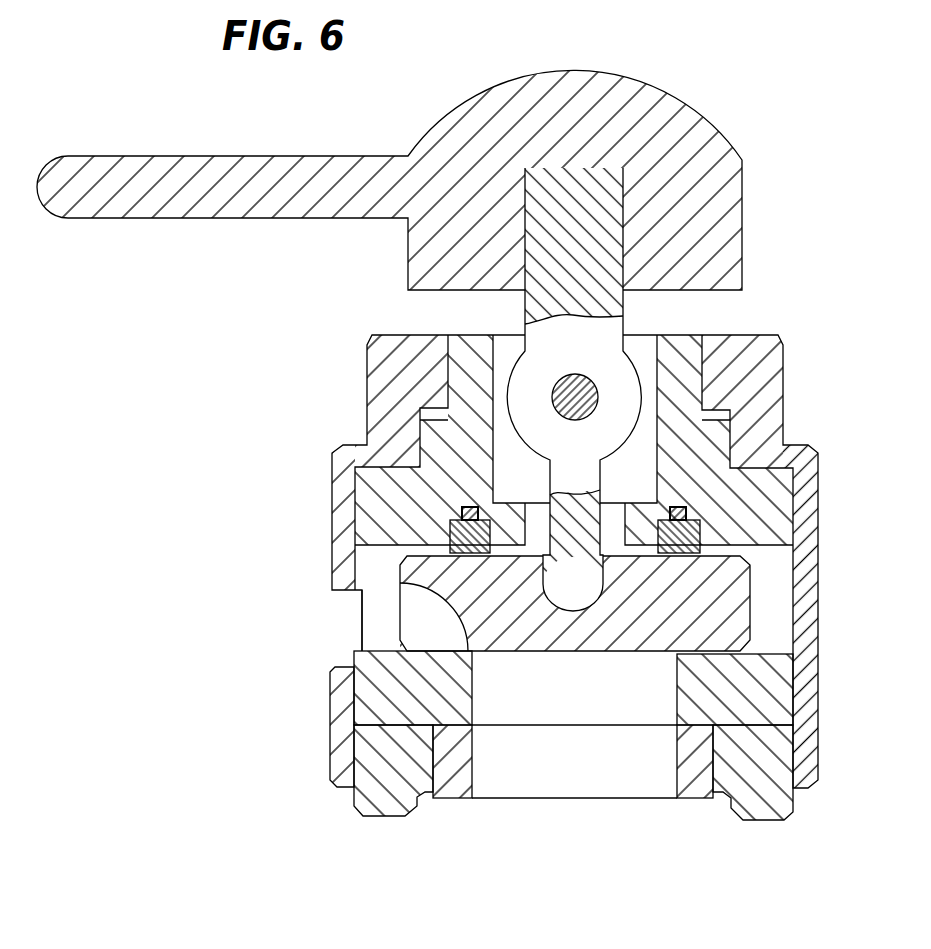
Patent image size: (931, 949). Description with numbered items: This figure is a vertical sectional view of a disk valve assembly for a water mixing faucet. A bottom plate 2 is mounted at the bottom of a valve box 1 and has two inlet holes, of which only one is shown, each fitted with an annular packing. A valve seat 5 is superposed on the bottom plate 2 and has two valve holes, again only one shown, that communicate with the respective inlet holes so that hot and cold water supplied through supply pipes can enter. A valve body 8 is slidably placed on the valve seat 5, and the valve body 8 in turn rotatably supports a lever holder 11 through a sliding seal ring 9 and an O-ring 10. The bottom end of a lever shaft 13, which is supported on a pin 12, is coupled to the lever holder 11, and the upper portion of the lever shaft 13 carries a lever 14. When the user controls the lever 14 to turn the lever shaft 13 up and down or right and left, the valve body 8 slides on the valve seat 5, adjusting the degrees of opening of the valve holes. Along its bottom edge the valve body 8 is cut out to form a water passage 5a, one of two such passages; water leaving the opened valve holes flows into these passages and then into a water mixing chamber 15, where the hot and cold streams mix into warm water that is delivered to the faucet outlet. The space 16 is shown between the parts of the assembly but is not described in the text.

The lever 14 is at (720, 147).
The lever shaft 13 is at (547, 313).
The pin 12 is at (573, 405).
The valve box 1 is at (770, 362).
The lever holder 11 is at (767, 482).
The O-ring 10 is at (464, 515).
The sliding seal ring 9 is at (688, 535).
The valve body 8 is at (735, 598).
The water passage 5a is at (400, 617).
The water mixing chamber 15 is at (373, 580).
The gap 16 is at (353, 638).
The valve seat 5 is at (770, 700).
The bottom plate 2 is at (788, 818).